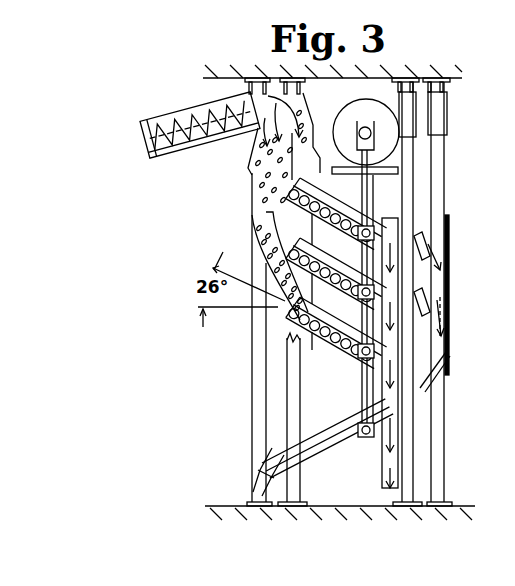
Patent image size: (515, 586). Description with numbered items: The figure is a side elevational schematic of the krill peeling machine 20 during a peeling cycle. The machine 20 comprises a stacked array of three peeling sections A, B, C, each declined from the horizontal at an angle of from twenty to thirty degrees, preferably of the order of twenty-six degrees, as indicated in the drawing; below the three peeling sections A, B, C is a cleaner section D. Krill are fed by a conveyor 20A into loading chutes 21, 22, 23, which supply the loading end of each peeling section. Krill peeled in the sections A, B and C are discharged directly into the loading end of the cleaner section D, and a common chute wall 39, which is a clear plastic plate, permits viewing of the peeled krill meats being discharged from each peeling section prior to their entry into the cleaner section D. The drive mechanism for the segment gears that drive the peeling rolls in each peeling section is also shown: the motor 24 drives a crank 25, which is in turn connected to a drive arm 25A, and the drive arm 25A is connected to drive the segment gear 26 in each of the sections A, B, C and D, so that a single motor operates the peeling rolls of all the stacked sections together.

The machine 20 is at (423, 203).
The conveyor 20A is at (193, 108).
The loading chute 21 is at (314, 136).
The loading chute 22 is at (272, 183).
The loading chute 23 is at (256, 178).
The motor 24 is at (381, 104).
The crank 25 is at (377, 130).
The drive arm 25A is at (372, 192).
The segment gear 26 is at (374, 236).
The common chute wall 39 is at (449, 248).
The peeling section A is at (360, 197).
The peeling section B is at (348, 256).
The peeling section C is at (347, 313).
The cleaner section D is at (346, 412).